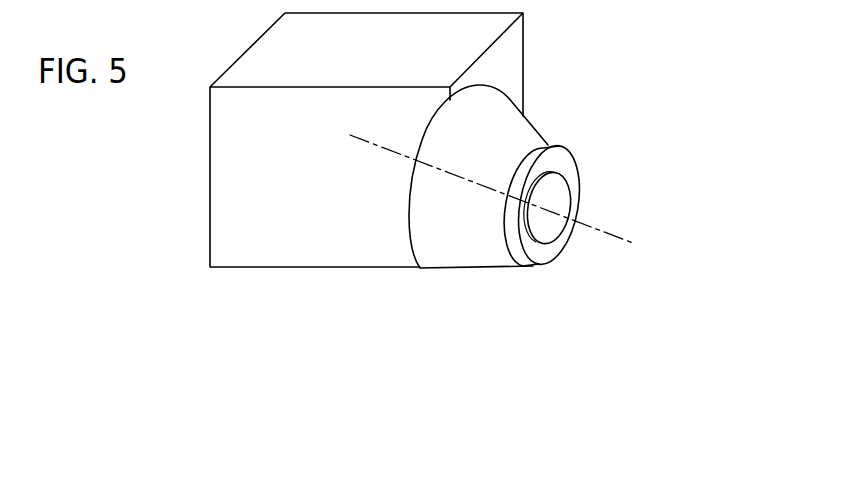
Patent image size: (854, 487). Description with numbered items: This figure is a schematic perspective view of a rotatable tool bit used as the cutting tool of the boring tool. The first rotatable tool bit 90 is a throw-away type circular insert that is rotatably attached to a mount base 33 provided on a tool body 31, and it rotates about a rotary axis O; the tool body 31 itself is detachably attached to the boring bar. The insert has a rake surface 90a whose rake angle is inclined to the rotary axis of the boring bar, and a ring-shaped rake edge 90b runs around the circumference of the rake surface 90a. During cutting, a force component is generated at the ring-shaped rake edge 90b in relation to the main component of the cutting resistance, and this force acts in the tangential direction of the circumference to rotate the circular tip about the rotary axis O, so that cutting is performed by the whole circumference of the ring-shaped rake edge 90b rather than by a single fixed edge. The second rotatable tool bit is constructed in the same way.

The tool body 31 is at (330, 255).
The mount base 33 is at (455, 253).
The first rotatable tool bit 90 is at (627, 212).
The rake surface 90a is at (570, 167).
The ring-shaped rake edge 90b is at (580, 187).
The rotary axis O is at (608, 232).